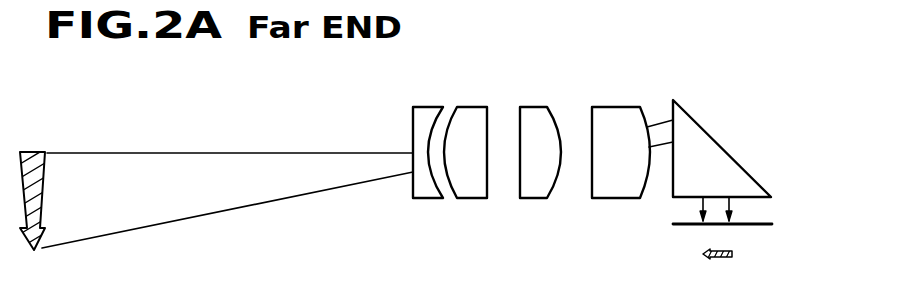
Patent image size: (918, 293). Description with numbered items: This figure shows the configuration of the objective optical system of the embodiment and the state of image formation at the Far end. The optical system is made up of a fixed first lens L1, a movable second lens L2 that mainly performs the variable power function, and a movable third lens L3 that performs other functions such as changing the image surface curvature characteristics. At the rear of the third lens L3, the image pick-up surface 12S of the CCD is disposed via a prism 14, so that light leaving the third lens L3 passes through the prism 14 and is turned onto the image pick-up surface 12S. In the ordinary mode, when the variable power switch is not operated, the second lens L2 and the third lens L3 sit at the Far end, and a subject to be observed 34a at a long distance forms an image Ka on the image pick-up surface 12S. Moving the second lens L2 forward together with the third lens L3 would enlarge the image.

The subject to be observed 34a is at (32, 152).
The first lens L1 is at (462, 118).
The second lens L2 is at (532, 116).
The third lens L3 is at (616, 116).
The prism 14 is at (707, 133).
The image pick-up surface 12S is at (759, 224).
The image Ka is at (734, 256).